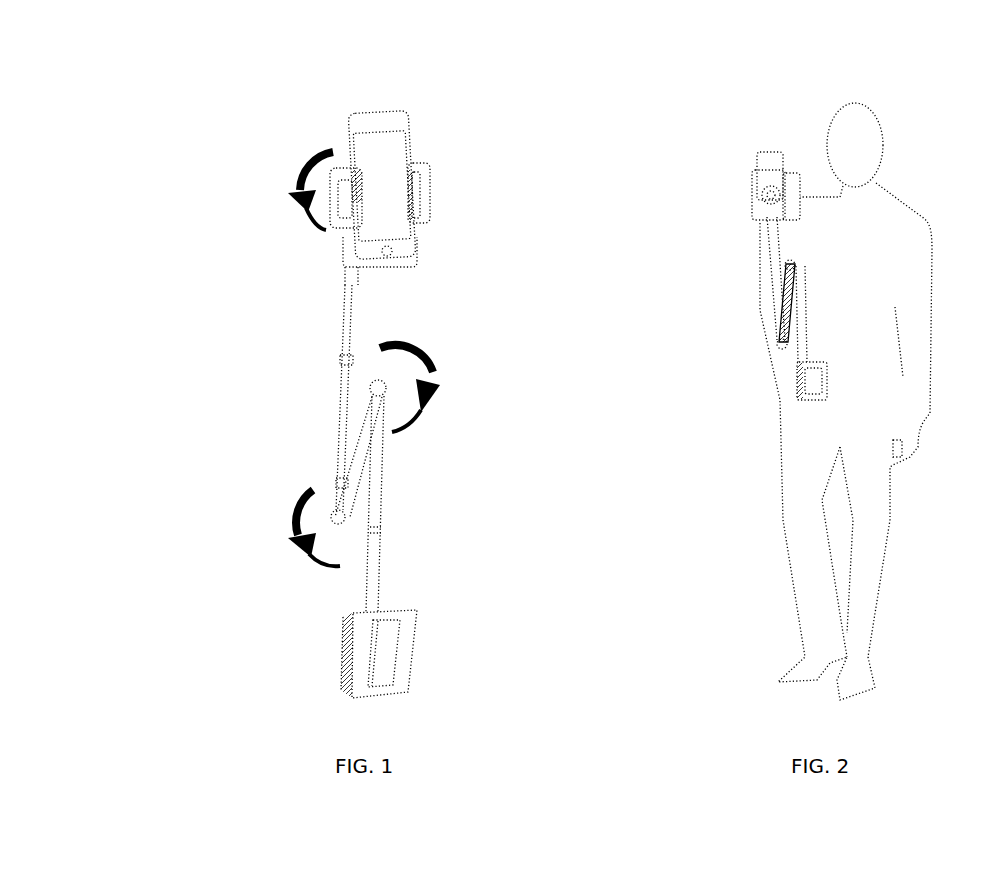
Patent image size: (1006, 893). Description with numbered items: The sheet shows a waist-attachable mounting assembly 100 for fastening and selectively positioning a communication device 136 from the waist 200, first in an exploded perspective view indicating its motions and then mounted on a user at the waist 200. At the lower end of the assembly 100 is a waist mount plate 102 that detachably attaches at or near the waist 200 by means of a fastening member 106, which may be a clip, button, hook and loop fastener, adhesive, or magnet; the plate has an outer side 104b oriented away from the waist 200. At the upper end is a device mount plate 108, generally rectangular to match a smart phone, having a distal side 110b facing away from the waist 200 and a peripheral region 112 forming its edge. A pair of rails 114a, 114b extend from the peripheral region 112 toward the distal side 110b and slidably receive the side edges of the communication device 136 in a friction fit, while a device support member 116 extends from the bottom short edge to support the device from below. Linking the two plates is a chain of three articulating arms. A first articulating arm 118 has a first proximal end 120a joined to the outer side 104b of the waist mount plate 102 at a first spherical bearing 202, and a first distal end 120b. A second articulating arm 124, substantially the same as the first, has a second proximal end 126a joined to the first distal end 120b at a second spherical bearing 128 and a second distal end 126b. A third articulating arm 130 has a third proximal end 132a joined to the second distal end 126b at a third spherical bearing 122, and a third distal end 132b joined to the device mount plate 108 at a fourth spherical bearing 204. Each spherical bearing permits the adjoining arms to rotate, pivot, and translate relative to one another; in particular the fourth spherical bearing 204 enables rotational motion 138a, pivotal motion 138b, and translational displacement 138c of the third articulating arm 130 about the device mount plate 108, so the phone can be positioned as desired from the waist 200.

In FIG. 1, the waist-attachable mounting assembly 100 is at (110, 160).
In FIG. 1, the waist mount plate 102 is at (428, 640).
In FIG. 2, the waist mount plate 102 is at (797, 390).
In FIG. 1, the outer side 104b is at (360, 682).
In FIG. 2, the outer side 104b is at (820, 378).
In FIG. 1, the fastening member 106 is at (392, 658).
In FIG. 1, the device mount plate 108 is at (326, 243).
In FIG. 2, the device mount plate 108 is at (744, 184).
In FIG. 2, the distal side 110b is at (762, 177).
In FIG. 1, the peripheral region 112 is at (343, 250).
In FIG. 1, the rail 114a is at (352, 175).
In FIG. 1, the rail 114b is at (422, 200).
In FIG. 2, the rail 114b is at (793, 177).
In FIG. 1, the device support member 116 is at (407, 263).
In FIG. 1, the first articulating arm 118 is at (383, 492).
In FIG. 2, the first articulating arm 118 is at (801, 338).
In FIG. 1, the first proximal end 120a is at (371, 598).
In FIG. 1, the first distal end 120b is at (393, 432).
In FIG. 1, the third spherical bearing 122 is at (336, 513).
In FIG. 2, the third spherical bearing 122 is at (782, 343).
In FIG. 1, the second articulating arm 124 is at (367, 450).
In FIG. 2, the second articulating arm 124 is at (800, 340).
In FIG. 1, the second proximal end 126a is at (365, 410).
In FIG. 1, the second distal end 126b is at (360, 477).
In FIG. 1, the second spherical bearing 128 is at (376, 380).
In FIG. 2, the second spherical bearing 128 is at (789, 264).
In FIG. 1, the third articulating arm 130 is at (345, 357).
In FIG. 2, the third articulating arm 130 is at (767, 240).
In FIG. 1, the third proximal end 132a is at (338, 487).
In FIG. 1, the third distal end 132b is at (350, 292).
In FIG. 1, the communication device 136 is at (372, 108).
In FIG. 2, the communication device 136 is at (771, 153).
In FIG. 1, the rotational motion 138a is at (300, 180).
In FIG. 1, the pivotal motion 138b is at (426, 362).
In FIG. 1, the translational displacement 138c is at (290, 530).
In FIG. 2, the waist 200 is at (860, 388).
In FIG. 2, the first spherical bearing 202 is at (807, 400).
In FIG. 2, the fourth spherical bearing 204 is at (765, 200).